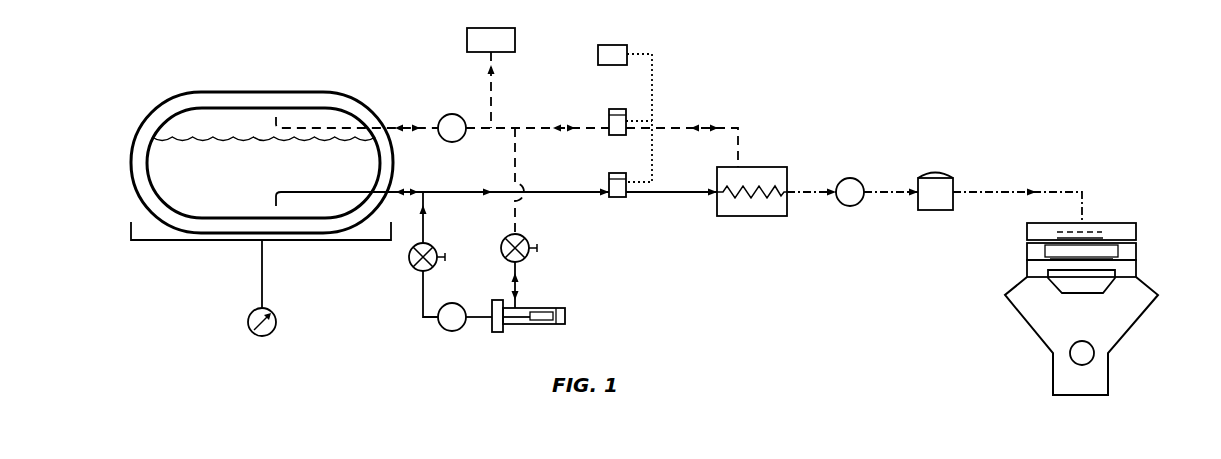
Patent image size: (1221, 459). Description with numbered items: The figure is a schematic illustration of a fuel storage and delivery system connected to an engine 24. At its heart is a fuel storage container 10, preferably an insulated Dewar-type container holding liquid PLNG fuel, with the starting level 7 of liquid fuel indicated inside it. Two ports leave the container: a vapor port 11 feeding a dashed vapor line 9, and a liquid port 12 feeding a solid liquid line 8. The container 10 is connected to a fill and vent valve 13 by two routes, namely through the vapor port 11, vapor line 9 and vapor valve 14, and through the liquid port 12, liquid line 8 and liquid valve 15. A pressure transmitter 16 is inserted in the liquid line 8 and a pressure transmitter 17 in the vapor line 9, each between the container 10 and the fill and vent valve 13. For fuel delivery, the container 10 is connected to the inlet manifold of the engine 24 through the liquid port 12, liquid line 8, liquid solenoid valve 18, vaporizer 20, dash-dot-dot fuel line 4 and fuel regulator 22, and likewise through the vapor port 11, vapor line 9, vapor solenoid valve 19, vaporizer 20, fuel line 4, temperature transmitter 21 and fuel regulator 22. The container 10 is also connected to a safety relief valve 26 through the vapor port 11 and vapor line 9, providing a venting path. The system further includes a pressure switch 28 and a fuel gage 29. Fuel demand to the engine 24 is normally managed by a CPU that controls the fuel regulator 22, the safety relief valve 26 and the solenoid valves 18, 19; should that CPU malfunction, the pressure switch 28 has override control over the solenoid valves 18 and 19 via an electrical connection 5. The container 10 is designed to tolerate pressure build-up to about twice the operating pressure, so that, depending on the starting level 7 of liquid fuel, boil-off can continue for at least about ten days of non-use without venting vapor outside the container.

The fuel line 4 is at (990, 192).
The electrical connection 5 is at (654, 80).
The starting level of liquid PLNG fuel 7 is at (171, 141).
The liquid line 8 is at (455, 192).
The vapor line 9 is at (484, 134).
The fuel storage container 10 is at (168, 74).
The vapor port 11 is at (392, 128).
The liquid port 12 is at (396, 192).
The fill and vent valve 13 is at (556, 308).
The vapor valve 14 is at (530, 238).
The liquid valve 15 is at (412, 268).
The pressure transmitter 16 is at (442, 328).
The pressure transmitter 17 is at (448, 114).
The liquid solenoid valve 18 is at (616, 173).
The vapor solenoid valve 19 is at (616, 109).
The vaporizer 20 is at (775, 167).
The temperature transmitter 21 is at (848, 178).
The fuel regulator 22 is at (934, 172).
The engine 24 is at (1172, 246).
The safety relief valve 26 is at (492, 28).
The pressure switch 28 is at (615, 45).
The fuel gage 29 is at (249, 318).